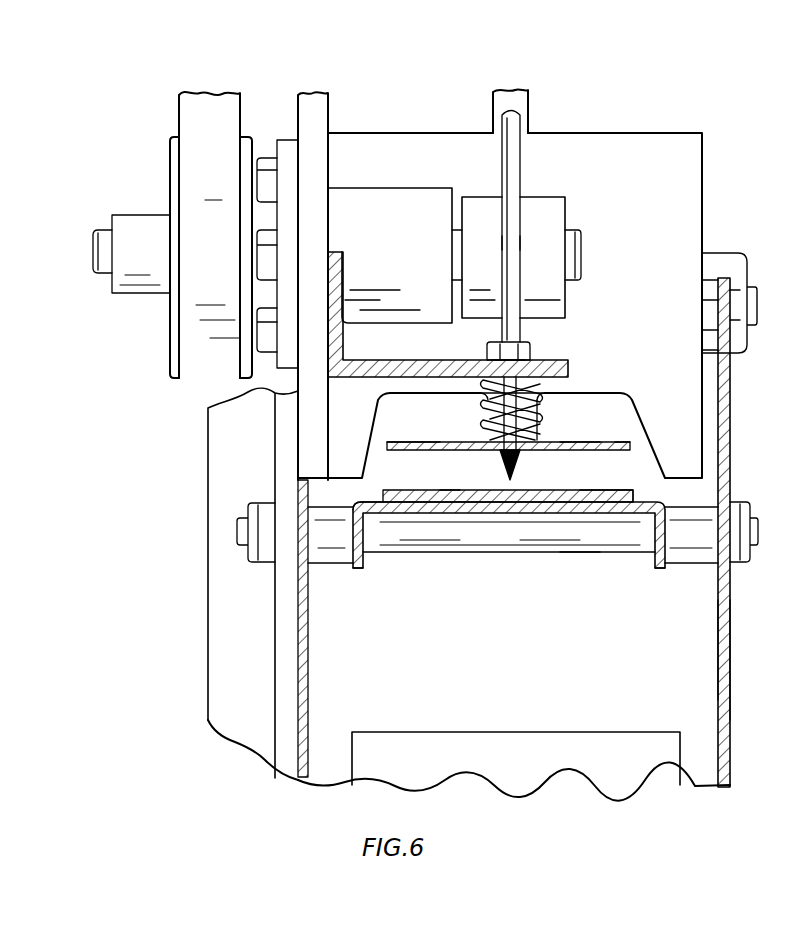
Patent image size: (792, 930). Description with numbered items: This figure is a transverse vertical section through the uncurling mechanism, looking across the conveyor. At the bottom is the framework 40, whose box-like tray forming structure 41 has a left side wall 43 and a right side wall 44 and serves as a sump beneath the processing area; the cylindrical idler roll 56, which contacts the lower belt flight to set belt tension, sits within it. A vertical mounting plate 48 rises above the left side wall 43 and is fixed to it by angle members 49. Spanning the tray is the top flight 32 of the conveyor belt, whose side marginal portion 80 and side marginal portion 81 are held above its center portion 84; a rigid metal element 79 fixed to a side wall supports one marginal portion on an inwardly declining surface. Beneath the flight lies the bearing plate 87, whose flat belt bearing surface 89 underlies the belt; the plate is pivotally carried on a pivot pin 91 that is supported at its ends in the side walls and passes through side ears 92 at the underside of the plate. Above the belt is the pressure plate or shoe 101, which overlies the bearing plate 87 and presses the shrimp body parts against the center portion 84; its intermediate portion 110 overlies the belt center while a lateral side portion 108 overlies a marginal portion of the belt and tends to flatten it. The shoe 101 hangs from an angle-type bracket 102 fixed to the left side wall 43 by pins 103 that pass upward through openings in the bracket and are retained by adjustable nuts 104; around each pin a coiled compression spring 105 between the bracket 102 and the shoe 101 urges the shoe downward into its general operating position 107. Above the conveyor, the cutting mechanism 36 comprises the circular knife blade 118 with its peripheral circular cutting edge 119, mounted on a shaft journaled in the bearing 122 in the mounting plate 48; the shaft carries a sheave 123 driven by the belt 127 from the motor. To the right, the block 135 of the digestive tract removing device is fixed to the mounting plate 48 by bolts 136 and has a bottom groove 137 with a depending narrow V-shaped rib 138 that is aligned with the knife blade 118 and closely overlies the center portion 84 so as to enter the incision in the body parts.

The belt 127 is at (180, 110).
The sheave 123 is at (172, 366).
The mounting plate 48 is at (330, 112).
The angle members 49 is at (208, 654).
The left side wall 43 is at (300, 646).
The block 135 is at (703, 168).
The bottom groove 137 is at (588, 393).
The cutting mechanism 36 is at (522, 166).
The circular cutting edge 119 is at (513, 243).
The bearing 122 is at (406, 188).
The knife blade 118 is at (522, 192).
The bracket 102 is at (396, 360).
The pins 103 is at (526, 343).
The nuts 104 is at (488, 355).
The intermediate portion 110 is at (502, 468).
The coiled compression spring 105 is at (488, 404).
The general operating position 107 is at (462, 442).
The lateral side portion 108 is at (418, 442).
The V-shaped rib 138 is at (524, 424).
The pressure plate or shoe 101 is at (596, 428).
The center portion 84 is at (528, 478).
The bearing plate 87 is at (448, 490).
The side marginal portion 81 is at (594, 478).
The top flight 32 is at (630, 478).
The side marginal portion 80 is at (428, 496).
The belt bearing surface 89 is at (396, 492).
The side ears 92 is at (363, 568).
The rigid metal element 79 is at (532, 552).
The pivot pin 91 is at (580, 552).
The framework 40 is at (731, 622).
The tray forming structure 41 is at (731, 660).
The right side wall 44 is at (731, 695).
The bolts 136 is at (716, 253).
The cylindrical idler roll 56 is at (444, 732).